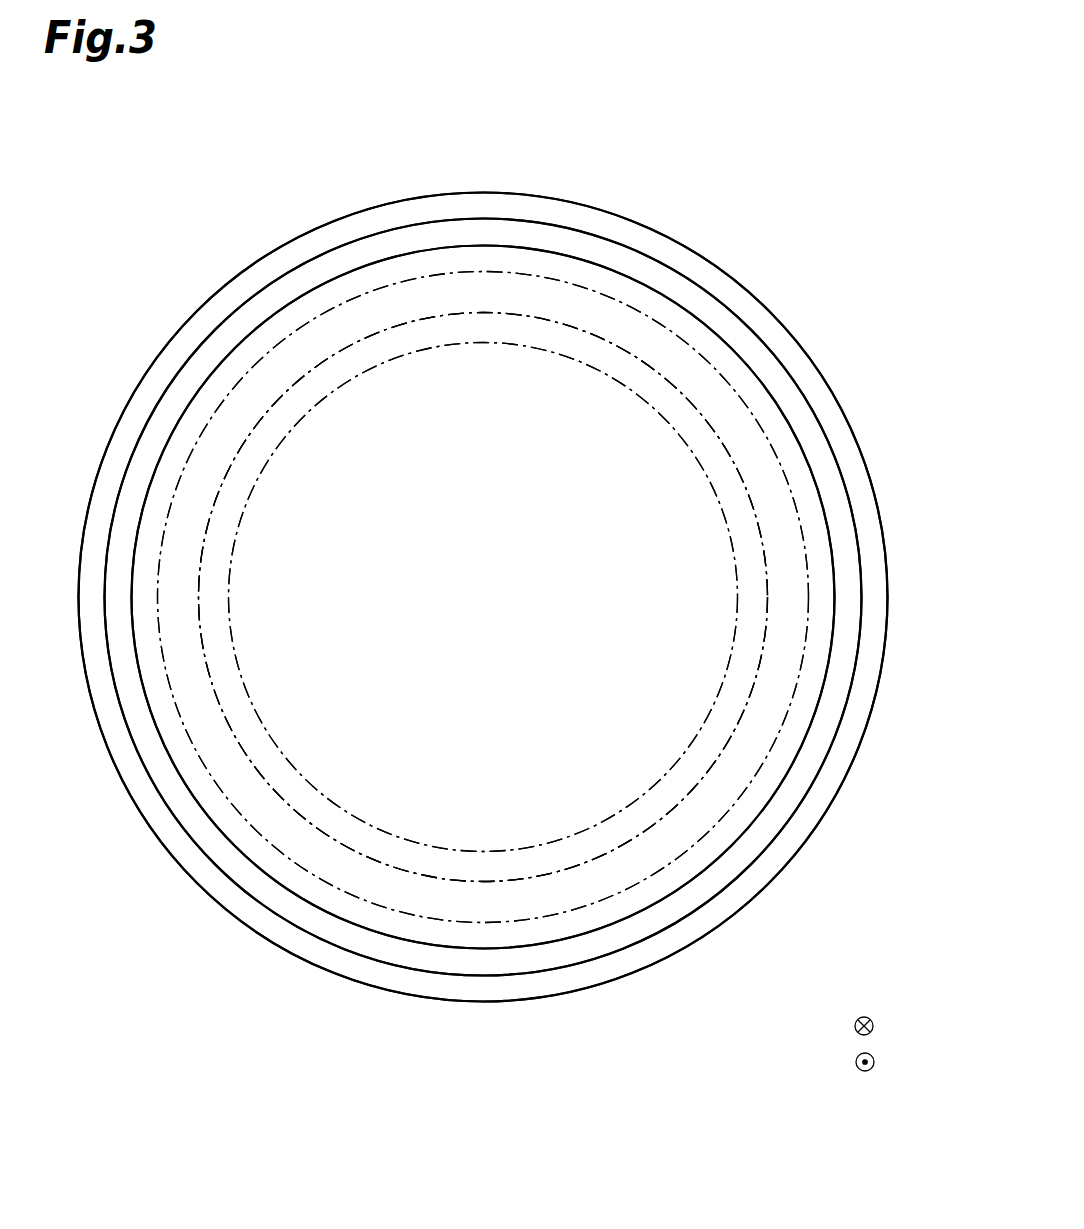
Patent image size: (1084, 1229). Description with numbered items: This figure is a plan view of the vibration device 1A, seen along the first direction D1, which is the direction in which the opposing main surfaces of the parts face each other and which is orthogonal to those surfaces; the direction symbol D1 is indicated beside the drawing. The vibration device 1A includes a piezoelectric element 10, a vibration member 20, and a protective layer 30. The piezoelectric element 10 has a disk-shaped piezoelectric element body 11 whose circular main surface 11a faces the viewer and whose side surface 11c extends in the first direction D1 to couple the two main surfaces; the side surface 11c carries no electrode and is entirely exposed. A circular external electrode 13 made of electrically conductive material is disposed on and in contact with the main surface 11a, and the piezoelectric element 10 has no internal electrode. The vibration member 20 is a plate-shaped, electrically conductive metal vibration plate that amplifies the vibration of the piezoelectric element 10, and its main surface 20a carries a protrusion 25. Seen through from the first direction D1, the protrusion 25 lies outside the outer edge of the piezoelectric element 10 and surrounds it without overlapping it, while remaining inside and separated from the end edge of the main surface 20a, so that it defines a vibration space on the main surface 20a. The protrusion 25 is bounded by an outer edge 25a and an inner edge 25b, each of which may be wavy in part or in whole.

The vibration device 1A is at (699, 116).
The piezoelectric element 10 is at (381, 870).
The piezoelectric element body 11 is at (333, 355).
The main surface 11a is at (705, 750).
The side surface 11c is at (255, 770).
The external electrode 13 is at (738, 585).
The vibration member 20 is at (206, 902).
The main surface 20a is at (708, 920).
The protrusion 25 is at (432, 955).
The outer edge 25a is at (267, 910).
The inner edge 25b is at (288, 893).
The protective layer 30 is at (769, 425).
The first direction D1 is at (873, 1032).